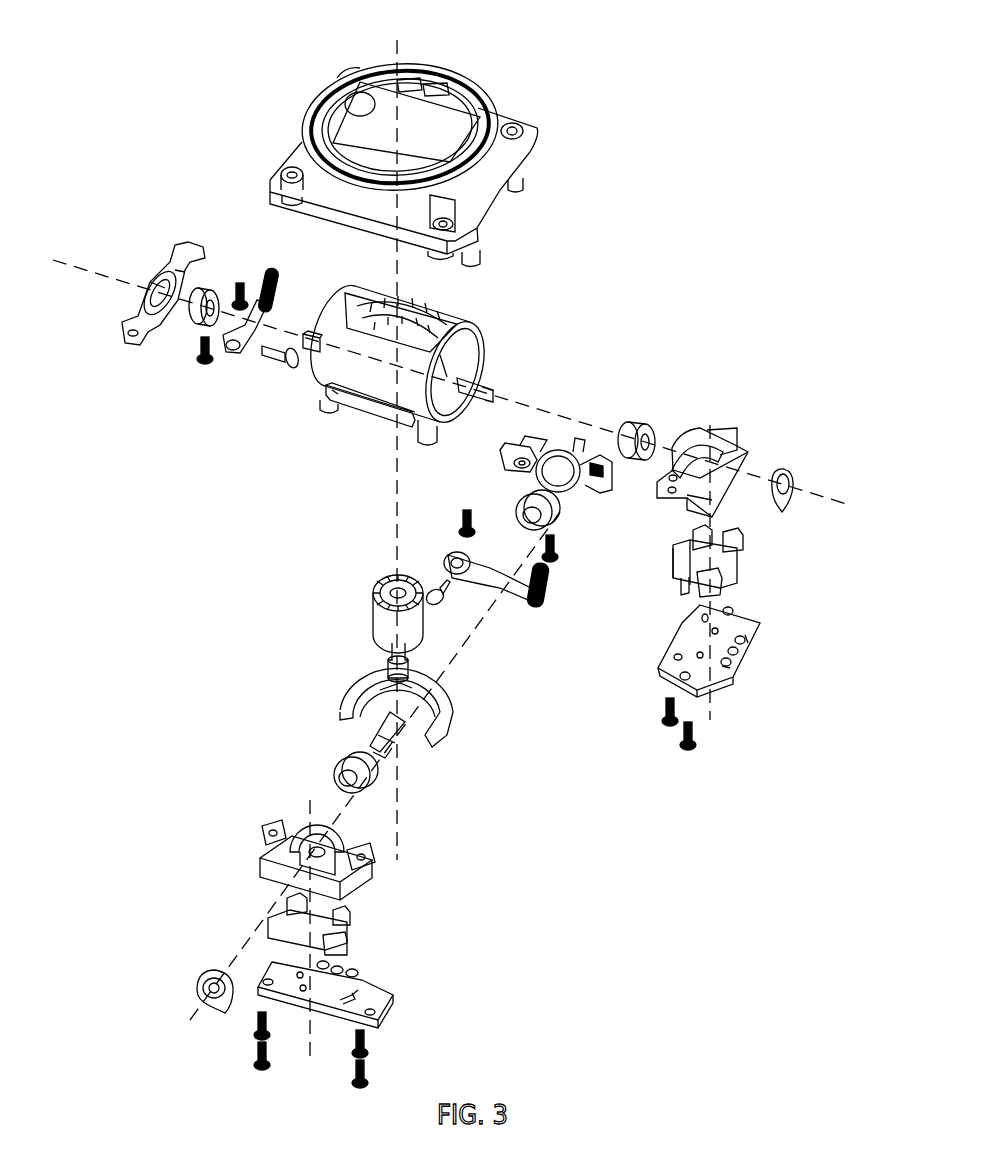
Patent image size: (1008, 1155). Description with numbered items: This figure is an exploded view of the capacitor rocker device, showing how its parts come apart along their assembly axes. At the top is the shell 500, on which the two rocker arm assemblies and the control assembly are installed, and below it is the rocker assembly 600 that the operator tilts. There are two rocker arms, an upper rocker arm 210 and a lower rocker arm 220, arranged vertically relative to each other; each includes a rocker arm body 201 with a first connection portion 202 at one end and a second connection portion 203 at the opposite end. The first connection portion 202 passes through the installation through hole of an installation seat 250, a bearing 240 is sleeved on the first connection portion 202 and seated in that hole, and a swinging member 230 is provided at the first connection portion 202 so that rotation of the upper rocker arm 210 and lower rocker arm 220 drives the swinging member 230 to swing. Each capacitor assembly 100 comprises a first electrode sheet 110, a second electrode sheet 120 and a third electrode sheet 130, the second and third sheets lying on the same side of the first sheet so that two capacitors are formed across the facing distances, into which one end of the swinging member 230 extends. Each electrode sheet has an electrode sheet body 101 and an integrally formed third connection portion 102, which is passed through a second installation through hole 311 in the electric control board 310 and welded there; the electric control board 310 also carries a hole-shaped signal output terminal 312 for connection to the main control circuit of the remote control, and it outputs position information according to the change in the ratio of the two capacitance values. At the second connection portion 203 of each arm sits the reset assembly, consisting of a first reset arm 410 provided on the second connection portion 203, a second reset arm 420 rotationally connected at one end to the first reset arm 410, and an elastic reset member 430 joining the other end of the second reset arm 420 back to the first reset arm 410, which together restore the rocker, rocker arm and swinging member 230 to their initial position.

The capacitor assembly 100 is at (820, 525).
The electrode sheet body 101 is at (688, 552).
The third connection portion 102 is at (686, 585).
The first electrode sheet 110 is at (715, 532).
The second electrode sheet 120 is at (745, 545).
The third electrode sheet 130 is at (724, 585).
The rocker arm body 201 is at (358, 390).
The first connection portion 202 is at (447, 377).
The second connection portion 203 is at (275, 358).
The upper rocker arm 210 is at (463, 330).
The lower rocker arm 220 is at (440, 705).
The swinging member 230 is at (796, 470).
The bearing 240 is at (655, 410).
The installation seat 250 is at (742, 446).
The electric control board 310 is at (745, 618).
The second installation through hole 311 is at (676, 654).
The signal output terminal 312 is at (755, 634).
The first reset arm 410 is at (162, 267).
The second reset arm 420 is at (240, 297).
The elastic reset member 430 is at (268, 268).
The shell 500 is at (518, 147).
The rocker assembly 600 is at (362, 608).